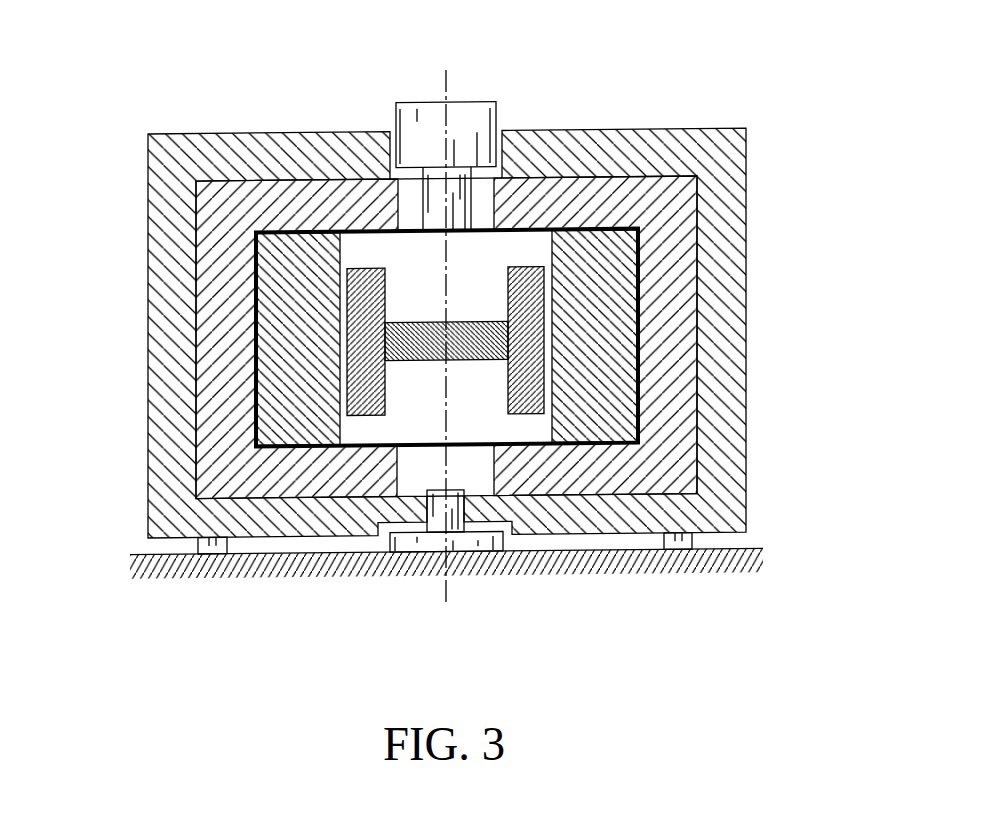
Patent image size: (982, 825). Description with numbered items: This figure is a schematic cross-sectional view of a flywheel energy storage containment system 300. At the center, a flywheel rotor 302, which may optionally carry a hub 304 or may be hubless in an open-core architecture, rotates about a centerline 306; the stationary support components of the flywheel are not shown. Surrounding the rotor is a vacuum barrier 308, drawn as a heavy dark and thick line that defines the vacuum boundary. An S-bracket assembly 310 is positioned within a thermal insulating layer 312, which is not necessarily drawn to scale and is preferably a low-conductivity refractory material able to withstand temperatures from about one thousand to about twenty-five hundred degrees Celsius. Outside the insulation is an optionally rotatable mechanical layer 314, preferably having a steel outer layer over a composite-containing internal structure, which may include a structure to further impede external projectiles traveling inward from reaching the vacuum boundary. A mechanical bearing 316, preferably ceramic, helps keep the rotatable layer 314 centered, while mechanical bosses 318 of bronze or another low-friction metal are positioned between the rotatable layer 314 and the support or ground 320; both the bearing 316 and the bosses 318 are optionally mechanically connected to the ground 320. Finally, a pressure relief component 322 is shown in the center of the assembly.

The flywheel energy storage containment system 300 is at (625, 68).
The flywheel rotor 302 is at (528, 272).
The hub 304 is at (490, 340).
The centerline 306 is at (447, 87).
The vacuum barrier 308 is at (638, 338).
The S-bracket assembly 310 is at (602, 378).
The thermal insulating layer 312 is at (228, 210).
The rotatable mechanical layer 314 is at (173, 287).
The mechanical bearing 316 is at (455, 557).
The mechanical bosses 318 is at (207, 544).
The support or ground 320 is at (138, 554).
The pressure relief component 322 is at (393, 116).